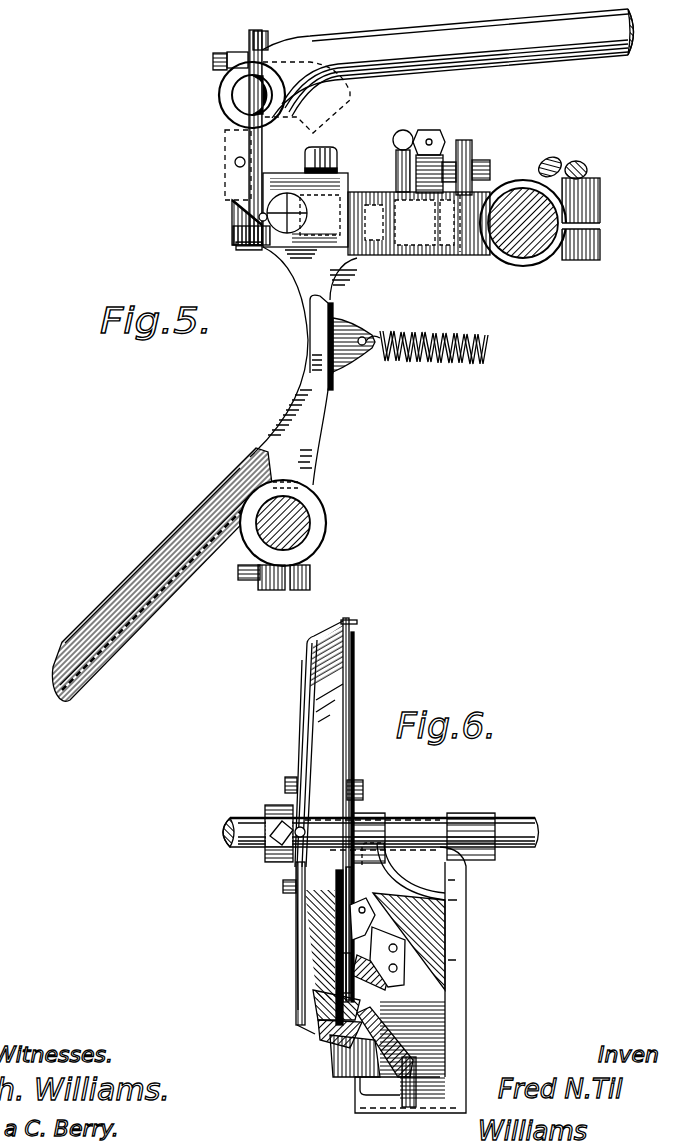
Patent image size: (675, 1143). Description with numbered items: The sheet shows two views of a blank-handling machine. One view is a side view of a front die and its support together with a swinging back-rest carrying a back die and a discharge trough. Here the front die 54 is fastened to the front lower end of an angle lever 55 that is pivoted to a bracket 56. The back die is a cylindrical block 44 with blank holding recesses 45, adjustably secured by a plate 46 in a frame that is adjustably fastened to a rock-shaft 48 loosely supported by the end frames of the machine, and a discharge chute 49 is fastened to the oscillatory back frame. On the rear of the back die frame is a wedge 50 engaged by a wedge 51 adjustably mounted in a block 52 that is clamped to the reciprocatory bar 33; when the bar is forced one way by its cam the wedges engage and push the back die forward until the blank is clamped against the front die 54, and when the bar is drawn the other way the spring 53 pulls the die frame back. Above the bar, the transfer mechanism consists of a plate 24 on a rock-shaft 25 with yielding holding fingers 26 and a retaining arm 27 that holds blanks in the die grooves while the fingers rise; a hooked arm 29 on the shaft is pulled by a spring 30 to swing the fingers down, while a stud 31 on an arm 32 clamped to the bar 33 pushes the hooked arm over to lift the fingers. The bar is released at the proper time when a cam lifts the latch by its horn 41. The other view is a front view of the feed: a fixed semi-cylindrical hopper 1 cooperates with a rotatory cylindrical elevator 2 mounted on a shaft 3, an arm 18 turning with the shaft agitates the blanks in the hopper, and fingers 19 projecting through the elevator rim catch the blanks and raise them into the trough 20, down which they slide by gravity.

In FIG. 6, the hopper 1 is at (456, 890).
In FIG. 6, the elevator 2 is at (312, 712).
In FIG. 6, the shaft 3 is at (225, 818).
In FIG. 6, the arm 18 is at (352, 683).
In FIG. 6, the fingers 19 is at (352, 622).
In FIG. 6, the trough 20 is at (340, 992).
In FIG. 5, the plate 24 is at (268, 37).
In FIG. 5, the rock-shaft 25 is at (233, 228).
In FIG. 5, the holding fingers 26 is at (246, 97).
In FIG. 5, the retaining arm 27 is at (267, 176).
In FIG. 5, the hooked arm 29 is at (440, 132).
In FIG. 5, the spring 30 is at (404, 130).
In FIG. 5, the stud 31 is at (460, 142).
In FIG. 5, the arm 32 is at (477, 146).
In FIG. 5, the reciprocatory bar 33 is at (507, 264).
In FIG. 5, the horn 41 is at (330, 278).
In FIG. 5, the back die 44 is at (268, 249).
In FIG. 5, the blank holding recesses 45 is at (241, 249).
In FIG. 5, the plate 46 is at (345, 175).
In FIG. 5, the rock-shaft 48 is at (319, 527).
In FIG. 5, the discharge chute 49 is at (125, 582).
In FIG. 5, the wedge 50 is at (376, 258).
In FIG. 5, the wedge 51 is at (418, 258).
In FIG. 5, the block 52 is at (441, 259).
In FIG. 5, the spring 53 is at (441, 362).
In FIG. 5, the front die 54 is at (236, 212).
In FIG. 5, the angle lever 55 is at (448, 63).
In FIG. 5, the bracket 56 is at (350, 98).